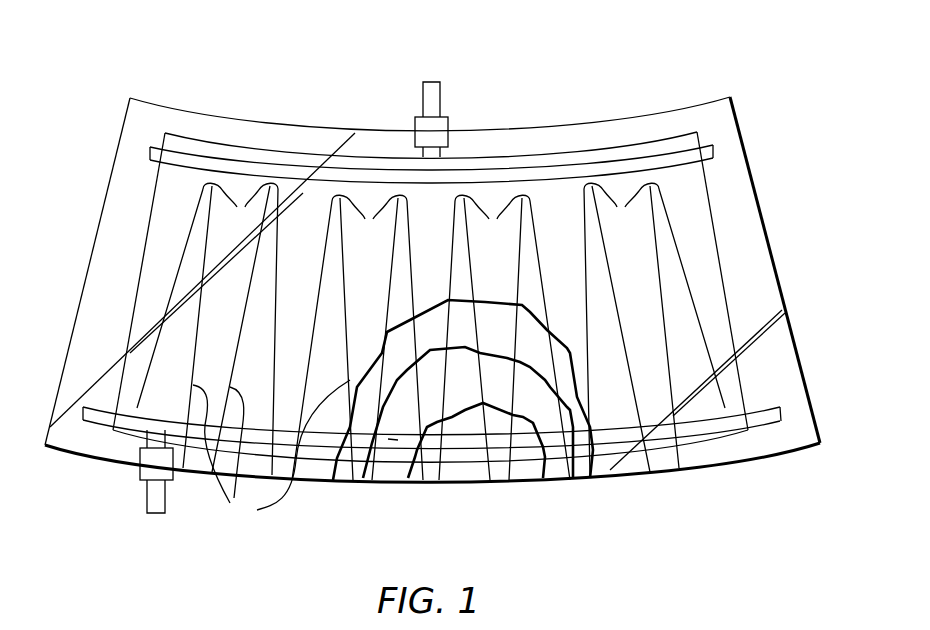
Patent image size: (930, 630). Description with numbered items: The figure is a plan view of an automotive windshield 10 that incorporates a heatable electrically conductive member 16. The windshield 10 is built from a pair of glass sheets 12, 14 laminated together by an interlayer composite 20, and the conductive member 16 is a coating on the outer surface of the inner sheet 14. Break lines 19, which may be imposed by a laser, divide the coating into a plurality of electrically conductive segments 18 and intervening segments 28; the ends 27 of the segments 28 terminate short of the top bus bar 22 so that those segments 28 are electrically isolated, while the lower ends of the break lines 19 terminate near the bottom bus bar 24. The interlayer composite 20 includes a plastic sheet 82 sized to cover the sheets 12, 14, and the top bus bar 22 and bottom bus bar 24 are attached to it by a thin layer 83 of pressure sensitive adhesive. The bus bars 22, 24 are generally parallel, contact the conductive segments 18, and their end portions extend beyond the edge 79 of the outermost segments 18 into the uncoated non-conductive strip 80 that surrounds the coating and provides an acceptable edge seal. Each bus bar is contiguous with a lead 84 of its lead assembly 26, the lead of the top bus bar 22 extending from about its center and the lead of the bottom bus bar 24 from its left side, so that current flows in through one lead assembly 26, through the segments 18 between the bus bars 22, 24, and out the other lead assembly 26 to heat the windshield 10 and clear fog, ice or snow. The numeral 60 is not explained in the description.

The automotive windshield 10 is at (740, 82).
The glass sheet 12 is at (487, 471).
The inner glass sheet 14 is at (738, 182).
The electrically conductive member 16 is at (115, 309).
The electrically conductive segments 18 is at (355, 167).
The break lines 19 is at (744, 297).
The interlayer composite 20 is at (431, 500).
The top bus bar 22 is at (493, 180).
The bottom bus bar 24 is at (622, 452).
The lead assembly 26 is at (458, 78).
The ends of segments 27 is at (431, 215).
The isolated coating segments 28 is at (245, 337).
The top edge 60 is at (152, 115).
The edge of outermost segments 79 is at (155, 193).
The uncoated non-conductive strip 80 is at (530, 137).
The plastic sheet 82 is at (469, 393).
The pressure sensitive adhesive layer 83 is at (398, 440).
The lead 84 is at (422, 102).